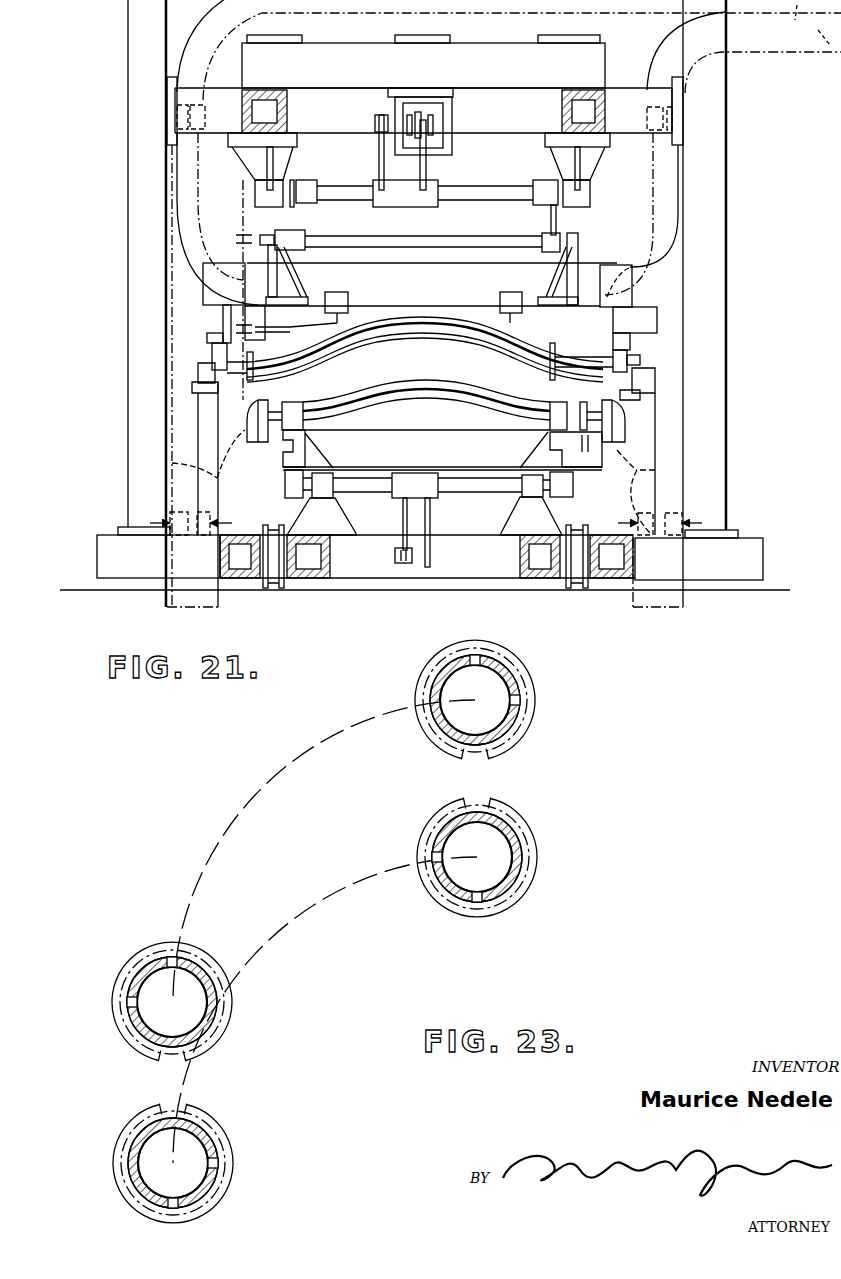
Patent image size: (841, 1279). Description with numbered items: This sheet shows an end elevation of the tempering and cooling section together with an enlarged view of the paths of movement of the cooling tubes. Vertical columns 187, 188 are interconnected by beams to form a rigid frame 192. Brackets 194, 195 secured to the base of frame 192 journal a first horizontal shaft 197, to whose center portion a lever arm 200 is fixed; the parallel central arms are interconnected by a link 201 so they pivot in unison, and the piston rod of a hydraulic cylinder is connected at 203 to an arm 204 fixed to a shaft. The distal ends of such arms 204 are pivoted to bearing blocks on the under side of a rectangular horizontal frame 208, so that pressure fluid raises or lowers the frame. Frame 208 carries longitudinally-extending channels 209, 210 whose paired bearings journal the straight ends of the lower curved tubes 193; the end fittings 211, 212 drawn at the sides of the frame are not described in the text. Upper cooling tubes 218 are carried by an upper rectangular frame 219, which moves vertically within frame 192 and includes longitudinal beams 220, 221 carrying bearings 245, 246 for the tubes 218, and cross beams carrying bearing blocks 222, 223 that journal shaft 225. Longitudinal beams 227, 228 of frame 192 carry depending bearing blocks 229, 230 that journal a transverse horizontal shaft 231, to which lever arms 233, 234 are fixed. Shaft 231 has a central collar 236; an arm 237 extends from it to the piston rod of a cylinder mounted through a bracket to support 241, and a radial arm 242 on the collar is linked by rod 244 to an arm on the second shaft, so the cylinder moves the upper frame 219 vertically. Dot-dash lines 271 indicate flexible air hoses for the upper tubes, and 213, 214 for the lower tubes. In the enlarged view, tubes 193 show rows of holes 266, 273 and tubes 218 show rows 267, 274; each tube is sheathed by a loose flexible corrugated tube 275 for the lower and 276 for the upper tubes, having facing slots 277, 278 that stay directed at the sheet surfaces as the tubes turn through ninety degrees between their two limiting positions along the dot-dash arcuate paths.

In FIG. 21, the vertical column 187 is at (138, 32).
In FIG. 21, the vertical column 188 is at (708, 283).
In FIG. 21, the rigid frame 192 is at (736, 395).
In FIG. 21, the lower curved tube 193 is at (437, 380).
In FIG. 23, the lower curved tube 193 is at (541, 890).
In FIG. 21, the bracket 194 is at (313, 518).
In FIG. 21, the bracket 195 is at (543, 512).
In FIG. 21, the first horizontal shaft 197 is at (497, 483).
In FIG. 21, the lever arm 200 is at (430, 527).
In FIG. 21, the link 201 is at (428, 565).
In FIG. 21, the piston rod connection 203 is at (402, 558).
In FIG. 21, the lever arm 204 is at (300, 477).
In FIG. 21, the rectangular horizontal frame 208 is at (444, 430).
In FIG. 21, the longitudinally-extending channel 209 is at (305, 450).
In FIG. 21, the longitudinally-extending channel 210 is at (550, 452).
In FIG. 21, the left hinge 211 is at (262, 418).
In FIG. 21, the right hinge 212 is at (627, 425).
In FIG. 21, the flexible hose line 213 is at (189, 464).
In FIG. 21, the flexible hose line 214 is at (656, 464).
In FIG. 21, the upper cooling tube 218 is at (395, 337).
In FIG. 23, the upper cooling tube 218 is at (538, 728).
In FIG. 21, the upper rectangular frame 219 is at (634, 278).
In FIG. 21, the longitudinally-extending beam 220 is at (224, 327).
In FIG. 21, the longitudinally-extending beam 221 is at (620, 323).
In FIG. 21, the bearing block 222 is at (298, 280).
In FIG. 21, the bearing block 223 is at (552, 283).
In FIG. 21, the shaft 225 is at (463, 242).
In FIG. 21, the longitudinal beam 227 is at (287, 112).
In FIG. 21, the longitudinal beam 228 is at (562, 110).
In FIG. 21, the bearing block 229 is at (290, 158).
In FIG. 21, the bearing block 230 is at (597, 163).
In FIG. 21, the transverse horizontal shaft 231 is at (497, 190).
In FIG. 21, the lever arm 233 is at (300, 213).
In FIG. 21, the lever arm 234 is at (553, 213).
In FIG. 21, the central collar 236 is at (407, 200).
In FIG. 21, the arm 237 is at (426, 153).
In FIG. 21, the support 241 is at (603, 62).
In FIG. 21, the radial arm 242 is at (382, 157).
In FIG. 21, the rod 244 is at (380, 115).
In FIG. 21, the bearing 245 is at (215, 352).
In FIG. 21, the bearing 246 is at (622, 360).
In FIG. 23, the row of holes 266 is at (423, 857).
In FIG. 23, the first row of holes 267 is at (521, 702).
In FIG. 21, the flexible hose line 271 is at (803, 25).
In FIG. 23, the row of holes 273 is at (477, 902).
In FIG. 23, the second row of holes 274 is at (476, 656).
In FIG. 23, the flexible corrugated tube 275 is at (535, 857).
In FIG. 23, the flexible corrugated tube 276 is at (420, 690).
In FIG. 23, the slot 277 is at (465, 806).
In FIG. 23, the slot 278 is at (466, 760).